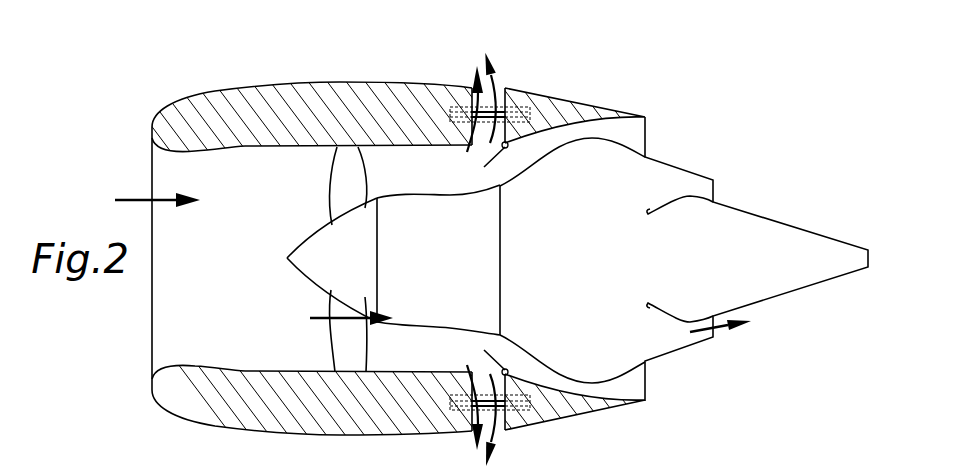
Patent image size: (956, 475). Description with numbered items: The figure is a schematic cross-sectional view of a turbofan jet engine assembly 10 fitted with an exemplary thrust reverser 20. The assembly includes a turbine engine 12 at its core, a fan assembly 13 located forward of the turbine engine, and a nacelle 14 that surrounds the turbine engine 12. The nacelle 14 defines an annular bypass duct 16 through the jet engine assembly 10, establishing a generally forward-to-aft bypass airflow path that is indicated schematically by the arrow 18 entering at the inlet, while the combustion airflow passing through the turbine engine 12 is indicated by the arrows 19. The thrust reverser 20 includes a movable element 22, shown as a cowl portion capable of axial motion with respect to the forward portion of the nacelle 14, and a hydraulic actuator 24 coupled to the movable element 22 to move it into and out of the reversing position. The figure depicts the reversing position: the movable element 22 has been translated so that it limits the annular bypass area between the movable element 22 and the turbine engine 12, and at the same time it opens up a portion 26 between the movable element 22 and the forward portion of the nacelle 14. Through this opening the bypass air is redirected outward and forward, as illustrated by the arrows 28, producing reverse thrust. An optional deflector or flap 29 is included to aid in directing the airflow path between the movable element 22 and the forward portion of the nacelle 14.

The turbofan jet engine assembly 10 is at (176, 90).
The turbine engine 12 is at (421, 270).
The fan assembly 13 is at (350, 168).
The nacelle 14 is at (238, 92).
The annular bypass duct 16 is at (407, 172).
The bypass airflow arrow 18 is at (130, 197).
The combustion airflow arrows 19 is at (318, 322).
The thrust reverser 20 is at (514, 131).
The movable element 22 is at (541, 90).
The hydraulic actuator 24 is at (507, 87).
The portion 26 is at (469, 98).
The reversed airflow arrows 28 is at (499, 78).
The deflector or flap 29 is at (502, 156).